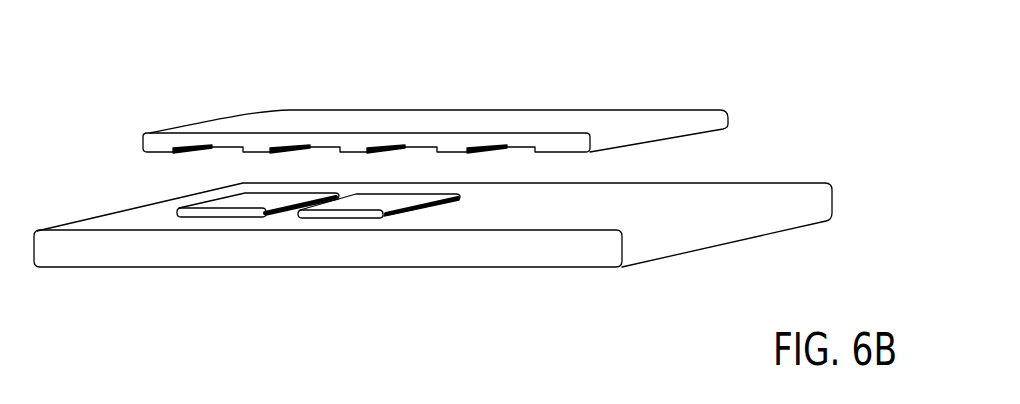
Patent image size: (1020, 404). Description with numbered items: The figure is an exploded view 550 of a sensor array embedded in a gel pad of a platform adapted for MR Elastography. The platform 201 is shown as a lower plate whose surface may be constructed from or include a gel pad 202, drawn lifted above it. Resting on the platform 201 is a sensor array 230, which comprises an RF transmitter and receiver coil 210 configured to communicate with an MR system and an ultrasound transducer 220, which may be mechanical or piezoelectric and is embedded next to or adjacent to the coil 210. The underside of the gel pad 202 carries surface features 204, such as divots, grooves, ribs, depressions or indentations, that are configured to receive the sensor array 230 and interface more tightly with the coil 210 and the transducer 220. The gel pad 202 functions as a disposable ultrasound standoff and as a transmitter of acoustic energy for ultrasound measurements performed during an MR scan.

The platform 201 is at (158, 247).
The gel pad 202 is at (203, 121).
The surface features 204 is at (212, 158).
The RF transmitter and receiver coil 210 is at (246, 204).
The ultrasound transducer 220 is at (379, 255).
The sensor array 230 is at (318, 283).
The exploded view 550 is at (848, 50).